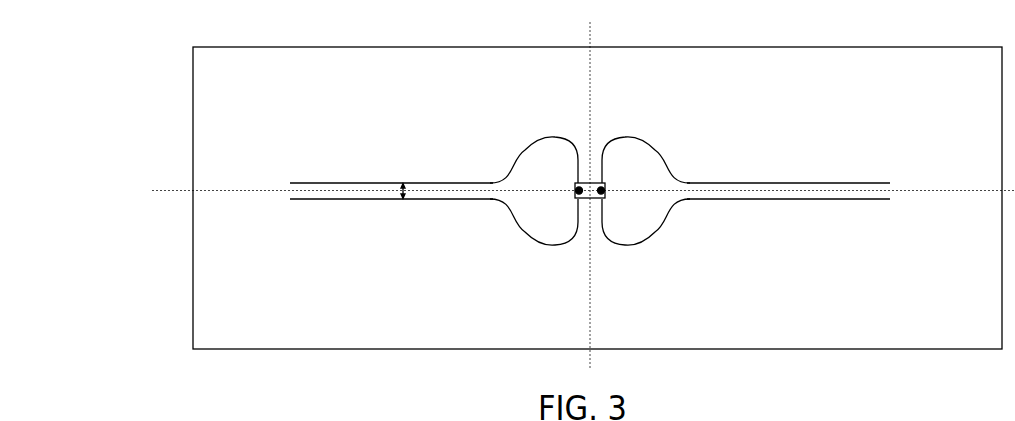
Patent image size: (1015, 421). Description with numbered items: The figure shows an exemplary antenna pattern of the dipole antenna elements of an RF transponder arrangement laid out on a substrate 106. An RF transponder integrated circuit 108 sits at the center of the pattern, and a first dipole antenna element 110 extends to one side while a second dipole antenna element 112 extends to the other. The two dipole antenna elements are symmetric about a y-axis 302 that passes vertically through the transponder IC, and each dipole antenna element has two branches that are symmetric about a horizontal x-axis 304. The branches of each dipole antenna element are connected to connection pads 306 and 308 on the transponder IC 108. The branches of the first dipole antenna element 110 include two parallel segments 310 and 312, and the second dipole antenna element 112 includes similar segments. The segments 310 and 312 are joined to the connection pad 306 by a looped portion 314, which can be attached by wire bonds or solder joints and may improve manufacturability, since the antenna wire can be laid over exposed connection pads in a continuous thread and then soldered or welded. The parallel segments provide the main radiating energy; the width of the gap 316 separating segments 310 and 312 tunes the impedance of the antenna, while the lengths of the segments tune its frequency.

The substrate 106 is at (878, 300).
The RF transponder integrated circuit 108 is at (583, 198).
The first dipole antenna element 110 is at (460, 200).
The second dipole antenna element 112 is at (724, 200).
The y-axis 302 is at (590, 28).
The x-axis 304 is at (161, 193).
The connection pad 306 is at (577, 187).
The connection pad 308 is at (605, 188).
The second segment 310 is at (353, 182).
The second segment 312 is at (353, 200).
The looped portion 314 is at (522, 153).
The gap 316 is at (402, 200).